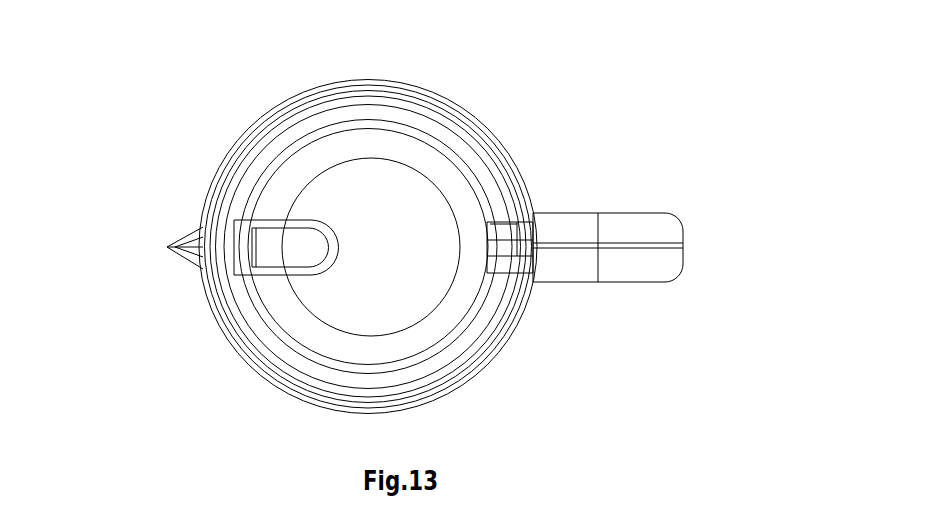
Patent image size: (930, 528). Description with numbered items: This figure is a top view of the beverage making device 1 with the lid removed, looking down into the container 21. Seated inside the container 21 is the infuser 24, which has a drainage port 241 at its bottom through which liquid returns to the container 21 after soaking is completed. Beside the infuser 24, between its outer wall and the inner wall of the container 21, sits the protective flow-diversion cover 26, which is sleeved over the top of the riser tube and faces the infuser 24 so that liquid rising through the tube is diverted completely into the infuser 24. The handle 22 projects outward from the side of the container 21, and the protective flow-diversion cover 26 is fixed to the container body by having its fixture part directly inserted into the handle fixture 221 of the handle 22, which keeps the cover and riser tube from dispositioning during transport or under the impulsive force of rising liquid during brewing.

The beverage making device 1 is at (518, 95).
The container 21 is at (278, 110).
The handle 22 is at (677, 243).
The handle fixture 221 is at (530, 248).
The infuser 24 is at (332, 295).
The drainage port at the bottom of the infuser 241 is at (287, 248).
The protective flow-diversion cover 26 is at (503, 253).